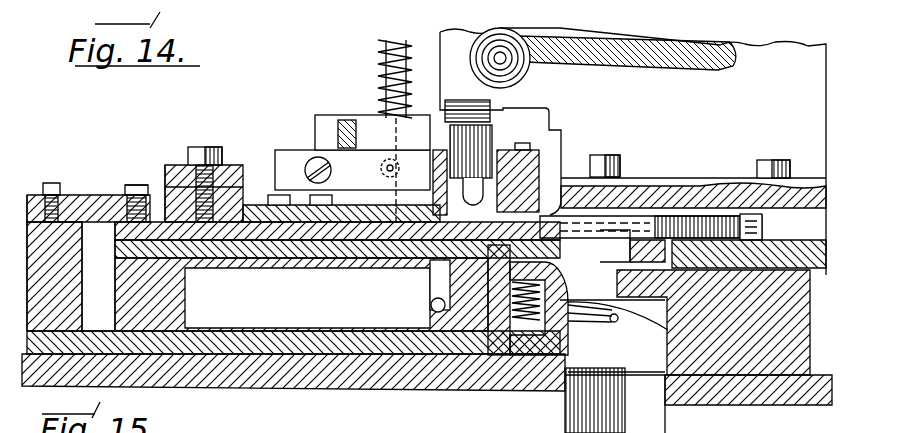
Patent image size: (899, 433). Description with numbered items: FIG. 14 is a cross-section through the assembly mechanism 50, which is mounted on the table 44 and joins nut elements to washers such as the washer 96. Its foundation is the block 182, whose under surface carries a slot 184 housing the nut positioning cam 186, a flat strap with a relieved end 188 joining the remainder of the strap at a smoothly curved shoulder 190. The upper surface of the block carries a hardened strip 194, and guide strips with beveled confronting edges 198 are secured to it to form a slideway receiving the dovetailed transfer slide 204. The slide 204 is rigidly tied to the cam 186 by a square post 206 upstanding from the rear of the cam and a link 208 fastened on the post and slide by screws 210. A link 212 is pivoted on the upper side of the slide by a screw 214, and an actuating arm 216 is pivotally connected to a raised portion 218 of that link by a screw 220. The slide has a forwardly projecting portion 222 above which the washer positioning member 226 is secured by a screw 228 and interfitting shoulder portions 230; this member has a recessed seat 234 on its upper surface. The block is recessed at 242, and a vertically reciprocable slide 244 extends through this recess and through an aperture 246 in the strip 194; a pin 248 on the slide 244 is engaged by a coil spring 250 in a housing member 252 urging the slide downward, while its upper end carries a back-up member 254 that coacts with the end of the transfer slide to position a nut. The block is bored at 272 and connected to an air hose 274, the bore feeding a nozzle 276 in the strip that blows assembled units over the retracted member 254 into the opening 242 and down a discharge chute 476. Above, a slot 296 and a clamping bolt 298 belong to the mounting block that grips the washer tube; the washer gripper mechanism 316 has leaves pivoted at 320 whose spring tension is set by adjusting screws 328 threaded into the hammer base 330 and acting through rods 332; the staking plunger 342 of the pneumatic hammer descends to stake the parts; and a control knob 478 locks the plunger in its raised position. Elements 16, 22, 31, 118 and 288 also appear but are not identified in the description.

The bolt 16 is at (46, 195).
The section line 22 is at (190, 125).
The section line 31 is at (375, 22).
The table 44 is at (780, 395).
The assembly mechanism 50 is at (345, 108).
The washer 96 is at (410, 68).
The slide block 118 is at (370, 190).
The block 182 is at (240, 331).
The slot 184 is at (288, 331).
The nut positioning cam 186 is at (305, 250).
The relieved end 188 is at (505, 356).
The smoothly curved shoulder 190 is at (478, 335).
The hardened strip 194 is at (258, 232).
The beveled confronting edges 198 is at (572, 362).
The transfer slide 204 is at (301, 294).
The square post 206 is at (74, 263).
The link 208 is at (72, 195).
The screws 210 is at (125, 188).
The link 212 is at (258, 200).
The screw 214 is at (300, 195).
The actuating arm 216 is at (178, 190).
The raised portion 218 is at (172, 193).
The screw 220 is at (190, 165).
The forwardly projecting portion 222 is at (425, 240).
The washer positioning member 226 is at (355, 250).
The screw 228 is at (340, 150).
The interfitting shoulder portions 230 is at (364, 295).
The recessed seat 234 is at (517, 166).
The recess 242 is at (660, 232).
The vertically reciprocable slide 244 is at (478, 355).
The aperture 246 is at (548, 288).
The pin 248 is at (572, 345).
The coil spring 250 is at (461, 285).
The housing member 252 is at (614, 311).
The back-up member 254 is at (562, 205).
The bore 272 is at (428, 305).
The air hose 274 is at (713, 302).
The nozzle 276 is at (430, 278).
The screw 288 is at (318, 158).
The slot 296 is at (415, 130).
The bolt 298 is at (350, 118).
The washer gripper mechanism 316 is at (552, 272).
The pivotal connection 320 is at (549, 125).
The adjusting screws 328 is at (720, 220).
The hammer base 330 is at (808, 81).
The rods 332 is at (615, 232).
The staking plunger 342 is at (505, 135).
The discharge chute 476 is at (660, 420).
The control knob 478 is at (520, 62).